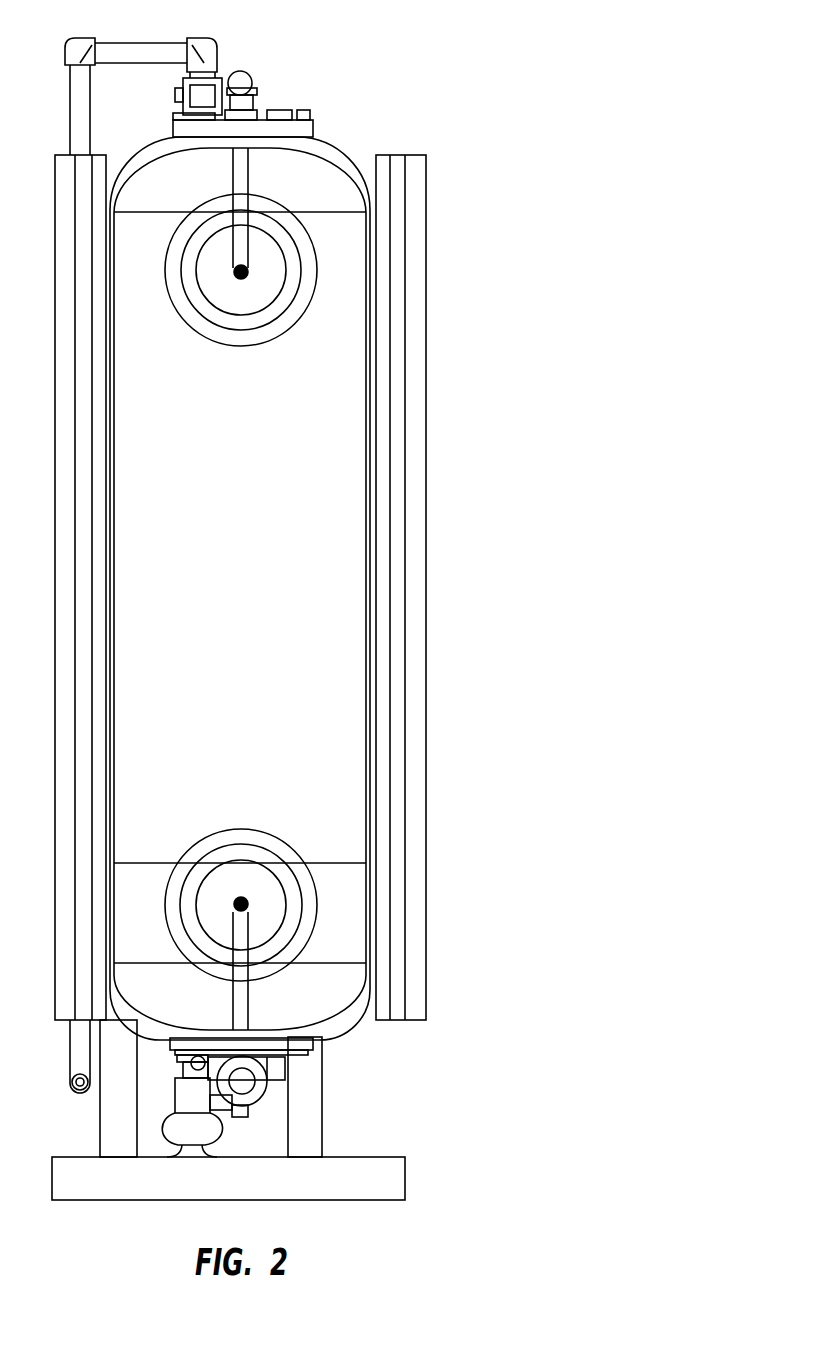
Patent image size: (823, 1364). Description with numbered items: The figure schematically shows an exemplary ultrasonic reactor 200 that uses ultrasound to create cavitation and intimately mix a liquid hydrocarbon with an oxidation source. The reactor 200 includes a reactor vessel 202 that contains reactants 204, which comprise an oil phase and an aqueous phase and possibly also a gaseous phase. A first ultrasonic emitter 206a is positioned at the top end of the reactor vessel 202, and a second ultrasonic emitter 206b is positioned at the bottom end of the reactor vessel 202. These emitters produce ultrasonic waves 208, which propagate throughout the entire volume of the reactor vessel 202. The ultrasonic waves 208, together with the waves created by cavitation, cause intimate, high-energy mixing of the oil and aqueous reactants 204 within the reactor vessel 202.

The reactor 200 is at (358, 127).
The reactor vessel 202 is at (357, 573).
The reactants 204 is at (240, 587).
The first ultrasonic emitter 206a is at (247, 172).
The second ultrasonic emitter 206b is at (455, 1050).
The ultrasonic waves 208 is at (273, 340).